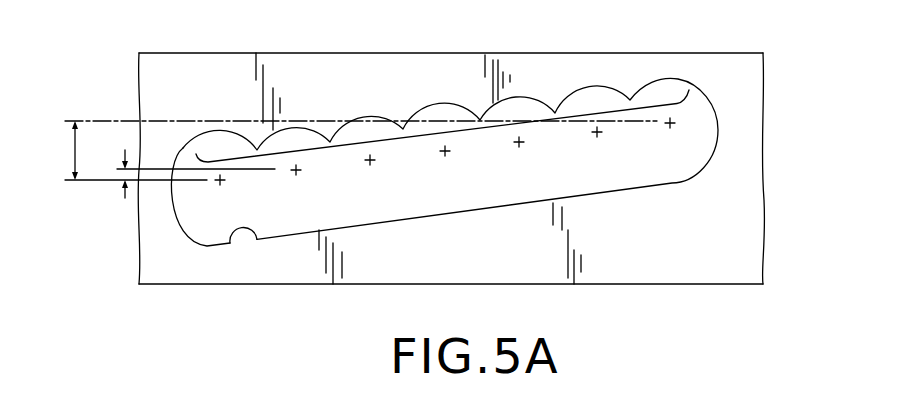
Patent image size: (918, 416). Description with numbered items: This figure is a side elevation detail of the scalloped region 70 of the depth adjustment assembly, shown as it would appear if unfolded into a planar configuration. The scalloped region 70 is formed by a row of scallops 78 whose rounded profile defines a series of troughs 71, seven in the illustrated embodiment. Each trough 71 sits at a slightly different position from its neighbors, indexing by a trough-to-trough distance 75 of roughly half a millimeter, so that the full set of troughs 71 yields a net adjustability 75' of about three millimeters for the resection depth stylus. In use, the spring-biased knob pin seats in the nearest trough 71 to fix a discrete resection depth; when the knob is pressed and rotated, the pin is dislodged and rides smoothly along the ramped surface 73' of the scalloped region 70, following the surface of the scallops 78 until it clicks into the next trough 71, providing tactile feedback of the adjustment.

The scalloped region 70 is at (736, 128).
The trough 71 is at (218, 137).
The ramped surface 73' is at (228, 271).
The trough-to-trough distance 75 is at (136, 184).
The net adjustability 75' is at (361, 150).
The scallops 78 is at (467, 130).